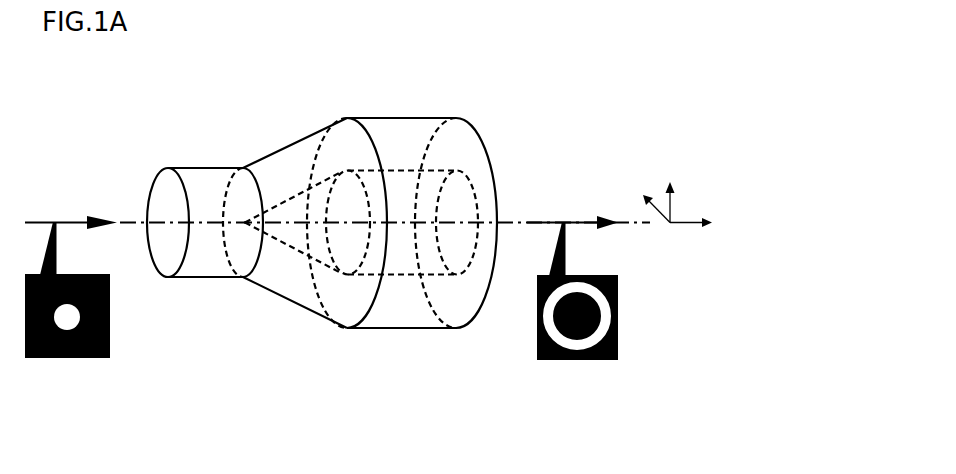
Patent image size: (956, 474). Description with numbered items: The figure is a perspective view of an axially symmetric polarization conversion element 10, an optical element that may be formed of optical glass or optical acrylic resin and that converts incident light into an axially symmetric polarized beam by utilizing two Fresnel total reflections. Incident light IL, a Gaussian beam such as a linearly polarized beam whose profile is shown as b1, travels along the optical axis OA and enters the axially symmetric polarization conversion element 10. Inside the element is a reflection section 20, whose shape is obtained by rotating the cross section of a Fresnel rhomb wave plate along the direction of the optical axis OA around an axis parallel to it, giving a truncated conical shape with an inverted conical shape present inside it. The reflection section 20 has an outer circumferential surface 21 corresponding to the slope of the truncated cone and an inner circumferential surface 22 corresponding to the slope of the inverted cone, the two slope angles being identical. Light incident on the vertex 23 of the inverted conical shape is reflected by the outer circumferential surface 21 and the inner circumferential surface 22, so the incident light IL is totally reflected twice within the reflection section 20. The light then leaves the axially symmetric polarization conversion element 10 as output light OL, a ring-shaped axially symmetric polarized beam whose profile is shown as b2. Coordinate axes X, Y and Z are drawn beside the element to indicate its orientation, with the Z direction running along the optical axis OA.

The axially symmetric polarization conversion element 10 is at (340, 200).
The reflection section 20 is at (290, 200).
The outer circumferential surface 21 is at (310, 132).
The inner circumferential surface 22 is at (273, 203).
The vertex 23 is at (243, 228).
The incident light IL is at (55, 222).
The output light OL is at (566, 222).
The optical axis OA is at (125, 220).
The Gaussian beam b1 is at (78, 360).
The ring-shaped axially symmetric polarized beam b2 is at (587, 362).
The X axis X is at (647, 197).
The Y axis Y is at (670, 190).
The Z axis Z is at (701, 223).